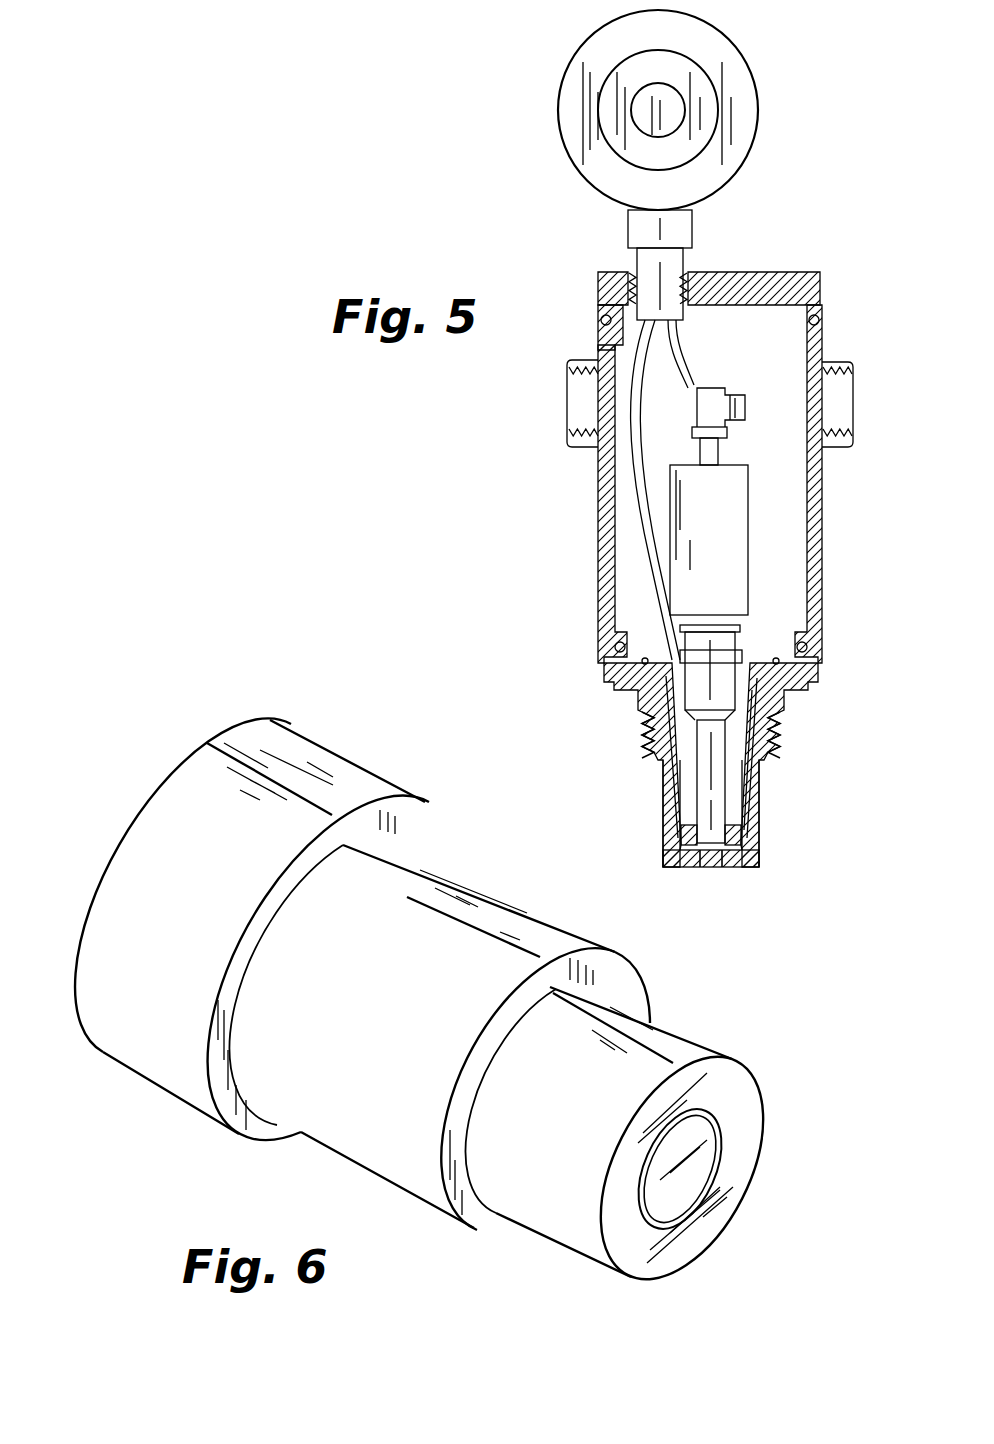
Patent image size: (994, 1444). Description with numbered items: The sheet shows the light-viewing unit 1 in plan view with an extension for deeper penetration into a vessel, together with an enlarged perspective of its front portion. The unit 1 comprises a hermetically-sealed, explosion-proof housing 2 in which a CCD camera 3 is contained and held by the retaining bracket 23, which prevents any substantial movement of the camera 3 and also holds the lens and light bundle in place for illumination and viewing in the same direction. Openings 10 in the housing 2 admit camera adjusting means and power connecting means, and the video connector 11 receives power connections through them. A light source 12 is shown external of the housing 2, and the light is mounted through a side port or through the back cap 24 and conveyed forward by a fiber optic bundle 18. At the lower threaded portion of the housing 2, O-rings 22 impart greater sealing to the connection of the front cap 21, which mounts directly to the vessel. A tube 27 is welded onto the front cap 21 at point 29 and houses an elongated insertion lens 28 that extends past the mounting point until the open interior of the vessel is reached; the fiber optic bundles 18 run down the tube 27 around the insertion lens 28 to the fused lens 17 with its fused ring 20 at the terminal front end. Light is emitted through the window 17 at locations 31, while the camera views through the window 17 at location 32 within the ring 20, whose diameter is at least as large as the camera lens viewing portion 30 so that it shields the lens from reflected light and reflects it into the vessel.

In FIG. 5, the light-viewing unit 1 is at (713, 484).
In FIG. 5, the housing 2 is at (825, 508).
In FIG. 5, the camera 3 is at (740, 508).
In FIG. 5, the openings 10 is at (575, 400).
In FIG. 5, the video connector 11 is at (604, 318).
In FIG. 5, the light source 12 is at (737, 48).
In FIG. 5, the fused lens 17 is at (718, 867).
In FIG. 6, the fused lens 17 is at (700, 1237).
In FIG. 5, the fiber optic bundle 18 is at (685, 810).
In FIG. 5, the fused ring 20 is at (690, 867).
In FIG. 6, the fused ring 20 is at (720, 1153).
In FIG. 5, the front cap 21 is at (648, 730).
In FIG. 6, the front cap 21 is at (581, 881).
In FIG. 5, the O-rings 22 is at (810, 320).
In FIG. 5, the retaining bracket 23 is at (622, 690).
In FIG. 5, the back cap 24 is at (820, 292).
In FIG. 5, the tube 27 is at (760, 845).
In FIG. 5, the insertion lens 28 is at (698, 773).
In FIG. 5, the weld point 29 is at (760, 765).
In FIG. 5, the camera lens viewing portion 30 is at (718, 798).
In FIG. 6, the light emission locations 31 is at (752, 1080).
In FIG. 6, the camera viewing location 32 is at (695, 1175).